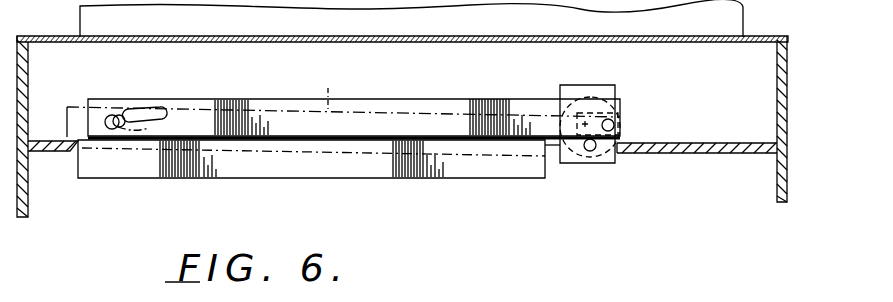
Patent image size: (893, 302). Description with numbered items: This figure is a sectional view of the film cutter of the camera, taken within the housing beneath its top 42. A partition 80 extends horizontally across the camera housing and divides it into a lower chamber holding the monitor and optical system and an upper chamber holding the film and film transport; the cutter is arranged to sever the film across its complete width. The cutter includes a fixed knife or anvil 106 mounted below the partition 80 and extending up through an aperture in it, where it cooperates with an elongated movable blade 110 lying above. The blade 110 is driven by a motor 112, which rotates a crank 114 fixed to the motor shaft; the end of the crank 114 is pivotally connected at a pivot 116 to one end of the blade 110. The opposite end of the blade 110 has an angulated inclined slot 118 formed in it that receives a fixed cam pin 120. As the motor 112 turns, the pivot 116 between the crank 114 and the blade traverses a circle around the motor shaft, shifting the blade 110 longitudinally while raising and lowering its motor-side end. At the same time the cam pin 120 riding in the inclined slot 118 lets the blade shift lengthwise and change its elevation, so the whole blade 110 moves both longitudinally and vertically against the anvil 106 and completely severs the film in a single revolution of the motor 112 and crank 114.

The top 42 is at (413, 36).
The partition 80 is at (730, 147).
The fixed knife or anvil 106 is at (348, 179).
The movable blade 110 is at (321, 99).
The motor 112 is at (595, 96).
The crank 114 is at (620, 100).
The pivot 116 is at (612, 133).
The angulated inclined slot 118 is at (158, 112).
The fixed cam pin 120 is at (119, 115).